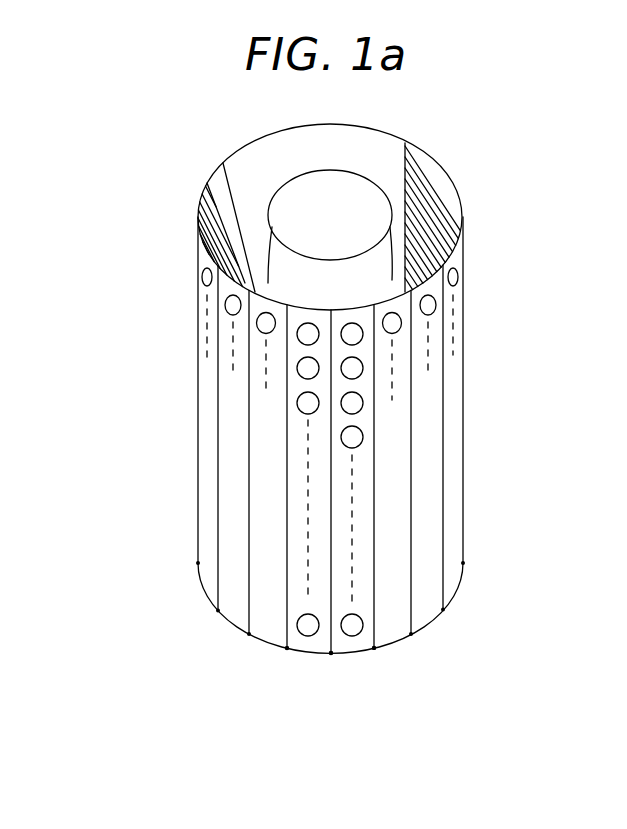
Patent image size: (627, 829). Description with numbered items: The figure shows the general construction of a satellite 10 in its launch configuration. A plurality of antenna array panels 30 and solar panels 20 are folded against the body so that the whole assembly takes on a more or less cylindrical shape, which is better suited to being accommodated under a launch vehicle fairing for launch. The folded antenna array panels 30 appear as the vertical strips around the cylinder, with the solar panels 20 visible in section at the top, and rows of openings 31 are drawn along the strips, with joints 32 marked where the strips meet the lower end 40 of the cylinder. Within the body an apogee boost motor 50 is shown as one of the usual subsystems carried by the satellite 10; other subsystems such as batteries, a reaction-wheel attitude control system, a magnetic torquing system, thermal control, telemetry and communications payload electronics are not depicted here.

The satellite 10 is at (160, 174).
The solar panels 20 is at (230, 177).
The antenna array panels 30 is at (393, 437).
The openings 31 is at (305, 368).
The panel joints 32 is at (283, 648).
The bottom end cap 40 is at (260, 640).
The apogee boost motor 50 is at (387, 208).